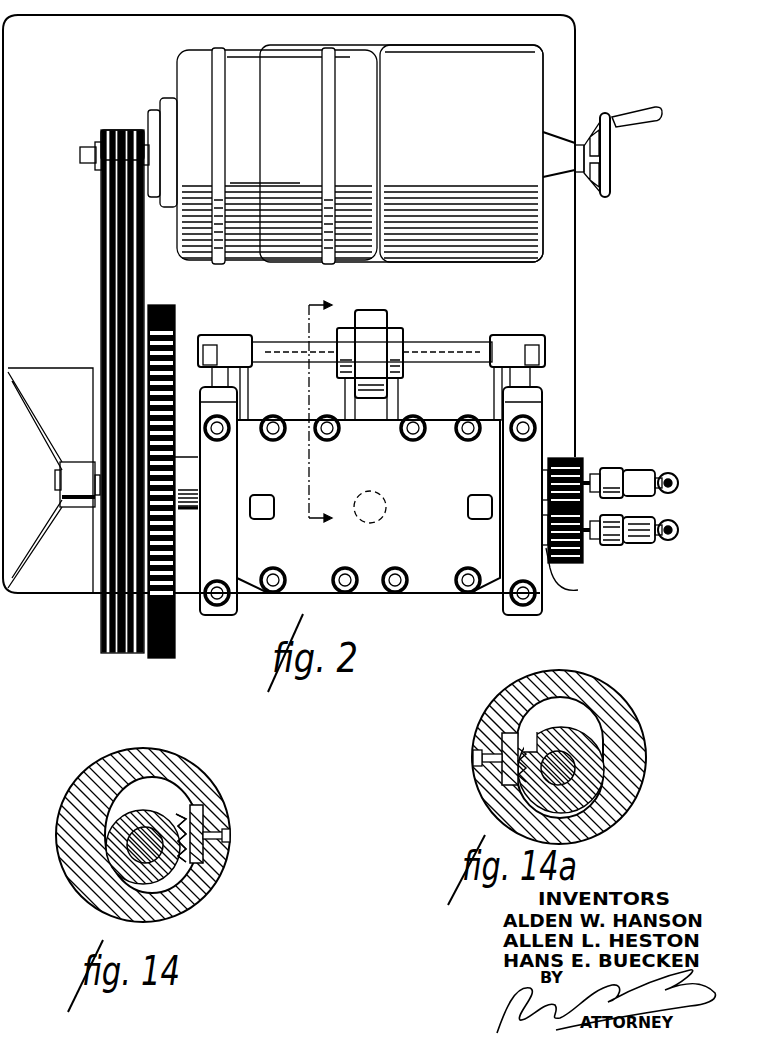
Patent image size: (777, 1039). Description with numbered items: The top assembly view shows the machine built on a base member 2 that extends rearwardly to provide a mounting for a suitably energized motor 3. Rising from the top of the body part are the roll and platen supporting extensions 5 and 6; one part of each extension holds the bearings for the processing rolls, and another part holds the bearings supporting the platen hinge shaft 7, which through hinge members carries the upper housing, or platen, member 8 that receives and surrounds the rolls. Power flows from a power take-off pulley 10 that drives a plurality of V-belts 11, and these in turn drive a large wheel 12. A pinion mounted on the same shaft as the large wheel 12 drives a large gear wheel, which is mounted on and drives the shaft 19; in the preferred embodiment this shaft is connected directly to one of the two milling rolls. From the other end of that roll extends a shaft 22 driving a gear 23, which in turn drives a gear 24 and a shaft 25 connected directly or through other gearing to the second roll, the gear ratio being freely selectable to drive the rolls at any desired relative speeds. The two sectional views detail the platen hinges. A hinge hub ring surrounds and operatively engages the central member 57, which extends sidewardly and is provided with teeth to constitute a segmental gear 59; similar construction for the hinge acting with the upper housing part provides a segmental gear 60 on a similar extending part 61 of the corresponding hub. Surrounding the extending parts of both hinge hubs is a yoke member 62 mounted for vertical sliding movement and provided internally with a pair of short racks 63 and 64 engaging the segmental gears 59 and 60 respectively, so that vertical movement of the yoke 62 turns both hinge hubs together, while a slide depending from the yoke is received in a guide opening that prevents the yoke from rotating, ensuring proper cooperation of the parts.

In FIG. 2, the base member 2 is at (80, 255).
In FIG. 2, the motor 3 is at (305, 122).
In FIG. 2, the roll and platen supporting extension 5 is at (215, 507).
In FIG. 2, the roll and platen supporting extension 6 is at (537, 458).
In FIG. 2, the platen hinge shaft 7 is at (427, 352).
In FIG. 14, the platen hinge shaft 7 is at (155, 867).
In FIG. 2, the upper housing member 8 is at (470, 460).
In FIG. 2, the power take-off pulley 10 is at (103, 128).
In FIG. 2, the V-belts 11 is at (145, 277).
In FIG. 2, the large wheel 12 is at (98, 652).
In FIG. 2, the shaft 19 is at (180, 463).
In FIG. 2, the shaft 22 is at (547, 478).
In FIG. 2, the gear 23 is at (583, 460).
In FIG. 2, the gear 24 is at (583, 560).
In FIG. 2, the shaft 25 is at (578, 591).
In FIG. 14, the central member 57 is at (120, 863).
In FIG. 14, the segmental gear 59 is at (177, 820).
In FIG. 14A, the segmental gear 60 is at (530, 750).
In FIG. 14A, the extending part 61 is at (602, 780).
In FIG. 14, the yoke member 62 is at (203, 800).
In FIG. 14A, the yoke member 62 is at (610, 702).
In FIG. 14, the short rack 63 is at (203, 863).
In FIG. 14A, the short rack 64 is at (503, 738).